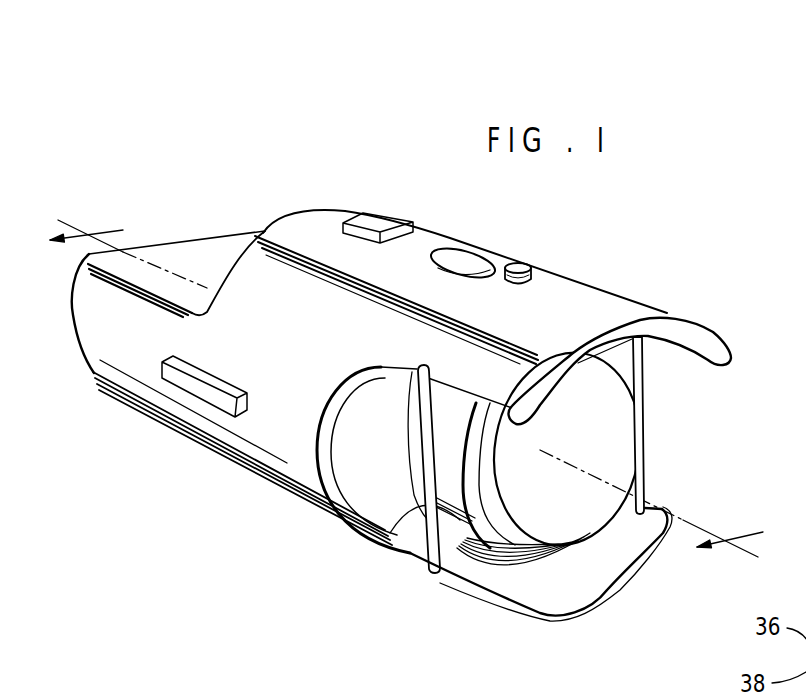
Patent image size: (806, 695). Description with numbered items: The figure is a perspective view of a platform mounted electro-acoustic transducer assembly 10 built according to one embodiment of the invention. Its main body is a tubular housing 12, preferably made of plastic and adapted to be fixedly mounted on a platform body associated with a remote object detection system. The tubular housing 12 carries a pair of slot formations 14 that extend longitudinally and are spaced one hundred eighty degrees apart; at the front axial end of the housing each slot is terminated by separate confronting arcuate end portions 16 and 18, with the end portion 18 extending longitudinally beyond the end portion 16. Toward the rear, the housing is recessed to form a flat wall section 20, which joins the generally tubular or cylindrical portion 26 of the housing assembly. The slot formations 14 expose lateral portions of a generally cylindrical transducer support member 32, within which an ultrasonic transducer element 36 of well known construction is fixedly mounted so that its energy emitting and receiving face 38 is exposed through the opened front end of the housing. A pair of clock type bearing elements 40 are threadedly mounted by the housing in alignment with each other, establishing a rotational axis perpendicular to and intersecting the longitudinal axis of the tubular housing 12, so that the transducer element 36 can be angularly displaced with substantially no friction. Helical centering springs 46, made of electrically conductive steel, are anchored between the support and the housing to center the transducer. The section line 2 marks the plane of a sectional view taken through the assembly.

The electro-acoustic transducer assembly 10 is at (257, 128).
The tubular housing 12 is at (369, 355).
The slot formations 14 is at (299, 513).
The arcuate end portion 16 is at (541, 580).
The arcuate end portion 18 is at (647, 367).
The flat wall section 20 is at (176, 253).
The tubular or cylindrical portion 26 is at (304, 198).
The transducer support member 32 is at (480, 470).
The ultrasonic transducer element 36 is at (476, 526).
The energy emitting and receiving face 38 is at (594, 449).
The bearing elements 40 is at (550, 252).
The helical centering springs 46 is at (523, 602).
The section line 2- 2 is at (406, 389).